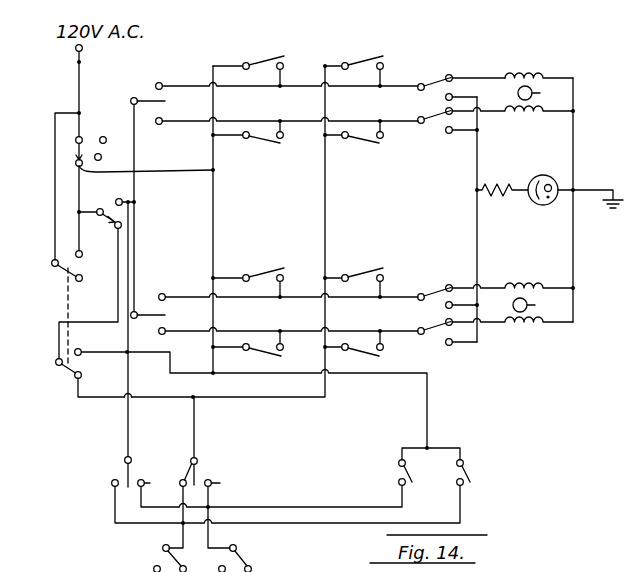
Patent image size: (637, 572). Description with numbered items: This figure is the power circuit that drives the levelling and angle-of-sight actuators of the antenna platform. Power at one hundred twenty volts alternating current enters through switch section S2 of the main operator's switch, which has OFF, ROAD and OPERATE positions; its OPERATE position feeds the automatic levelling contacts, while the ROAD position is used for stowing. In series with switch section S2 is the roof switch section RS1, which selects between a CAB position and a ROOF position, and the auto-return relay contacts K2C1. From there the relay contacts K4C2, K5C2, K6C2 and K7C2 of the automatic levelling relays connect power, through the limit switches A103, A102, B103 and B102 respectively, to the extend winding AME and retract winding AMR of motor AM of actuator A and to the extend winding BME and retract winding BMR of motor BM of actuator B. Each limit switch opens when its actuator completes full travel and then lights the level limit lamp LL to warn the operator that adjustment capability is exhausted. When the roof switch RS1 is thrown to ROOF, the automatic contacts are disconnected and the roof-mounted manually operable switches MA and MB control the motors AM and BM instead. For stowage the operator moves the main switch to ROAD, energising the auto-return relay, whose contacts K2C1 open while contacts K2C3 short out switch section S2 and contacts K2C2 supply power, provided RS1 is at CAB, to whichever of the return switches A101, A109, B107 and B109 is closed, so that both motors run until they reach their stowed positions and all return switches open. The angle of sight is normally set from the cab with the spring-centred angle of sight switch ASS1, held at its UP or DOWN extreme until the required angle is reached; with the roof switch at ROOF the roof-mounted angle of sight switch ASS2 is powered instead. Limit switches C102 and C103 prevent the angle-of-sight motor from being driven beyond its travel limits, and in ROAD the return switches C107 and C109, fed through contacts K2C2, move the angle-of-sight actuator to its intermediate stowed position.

The switch section S2 is at (77, 151).
The OFF position OFF is at (113, 128).
The ROAD position ROAD is at (100, 159).
The ROOF position ROOF is at (121, 199).
The CAB position CAB is at (121, 226).
The roof switch section RS1 is at (97, 232).
The auto-return relay contacts K2C3 is at (82, 256).
The manually operable switch MA is at (146, 100).
The manually operable switch MB is at (163, 314).
The OPERATE position OPERATE is at (261, 175).
The return switch A109 is at (248, 63).
The relay contacts K5C2 is at (354, 63).
The return switch A101 is at (248, 138).
The relay contacts K4C2 is at (354, 144).
The return switch B107 is at (248, 276).
The relay contacts K7C2 is at (359, 275).
The return switch B109 is at (248, 353).
The relay contacts K6C2 is at (354, 354).
The limit switch A102 is at (454, 78).
The retract winding AMR is at (537, 63).
The motor AM is at (544, 93).
The limit switch A103 is at (445, 133).
The extend winding AME is at (512, 122).
The level limit lamp LL is at (543, 181).
The limit switch B103 is at (447, 286).
The extend winding BME is at (512, 275).
The motor BM is at (539, 306).
The limit switch B102 is at (447, 343).
The retract winding BMR is at (512, 334).
The auto-return relay contacts K2C2 is at (79, 356).
The auto-return relay contacts K2C1 is at (76, 378).
The angle of sight switch ASS2 is at (102, 472).
The DOWN position DOWN is at (124, 448).
The UP position UP is at (192, 485).
The angle of sight switch ASS1 is at (229, 469).
The limit switch C102 is at (148, 529).
The limit switch C103 is at (250, 529).
The return switch C107 is at (378, 473).
The return switch C109 is at (488, 473).